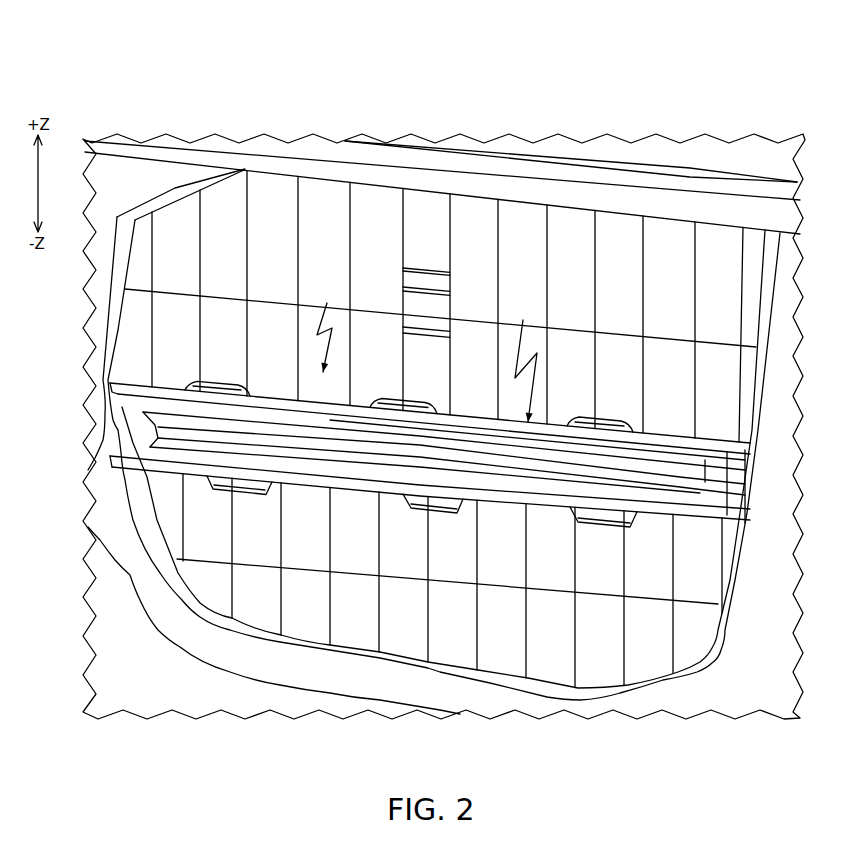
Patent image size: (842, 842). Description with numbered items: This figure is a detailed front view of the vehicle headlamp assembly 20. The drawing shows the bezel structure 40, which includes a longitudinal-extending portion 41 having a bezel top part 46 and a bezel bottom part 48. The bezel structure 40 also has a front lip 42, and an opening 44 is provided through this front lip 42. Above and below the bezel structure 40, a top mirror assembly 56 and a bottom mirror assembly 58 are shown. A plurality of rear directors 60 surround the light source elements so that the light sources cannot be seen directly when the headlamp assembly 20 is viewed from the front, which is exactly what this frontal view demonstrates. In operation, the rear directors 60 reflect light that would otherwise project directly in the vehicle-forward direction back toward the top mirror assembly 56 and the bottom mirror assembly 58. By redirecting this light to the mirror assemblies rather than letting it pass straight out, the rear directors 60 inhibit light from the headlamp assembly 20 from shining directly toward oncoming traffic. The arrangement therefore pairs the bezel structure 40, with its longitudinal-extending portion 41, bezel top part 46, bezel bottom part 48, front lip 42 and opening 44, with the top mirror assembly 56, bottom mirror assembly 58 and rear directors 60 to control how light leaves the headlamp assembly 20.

The headlamp assembly 20 is at (444, 372).
The bezel structure 40 is at (132, 399).
The longitudinal-extending portion 41 is at (332, 327).
The front lip 42 is at (653, 453).
The opening 44 is at (688, 479).
The bezel top part 46 is at (523, 360).
The bezel bottom part 48 is at (427, 505).
The top mirror assembly 56 is at (525, 257).
The bottom mirror assembly 58 is at (660, 638).
The rear directors 60 is at (610, 420).